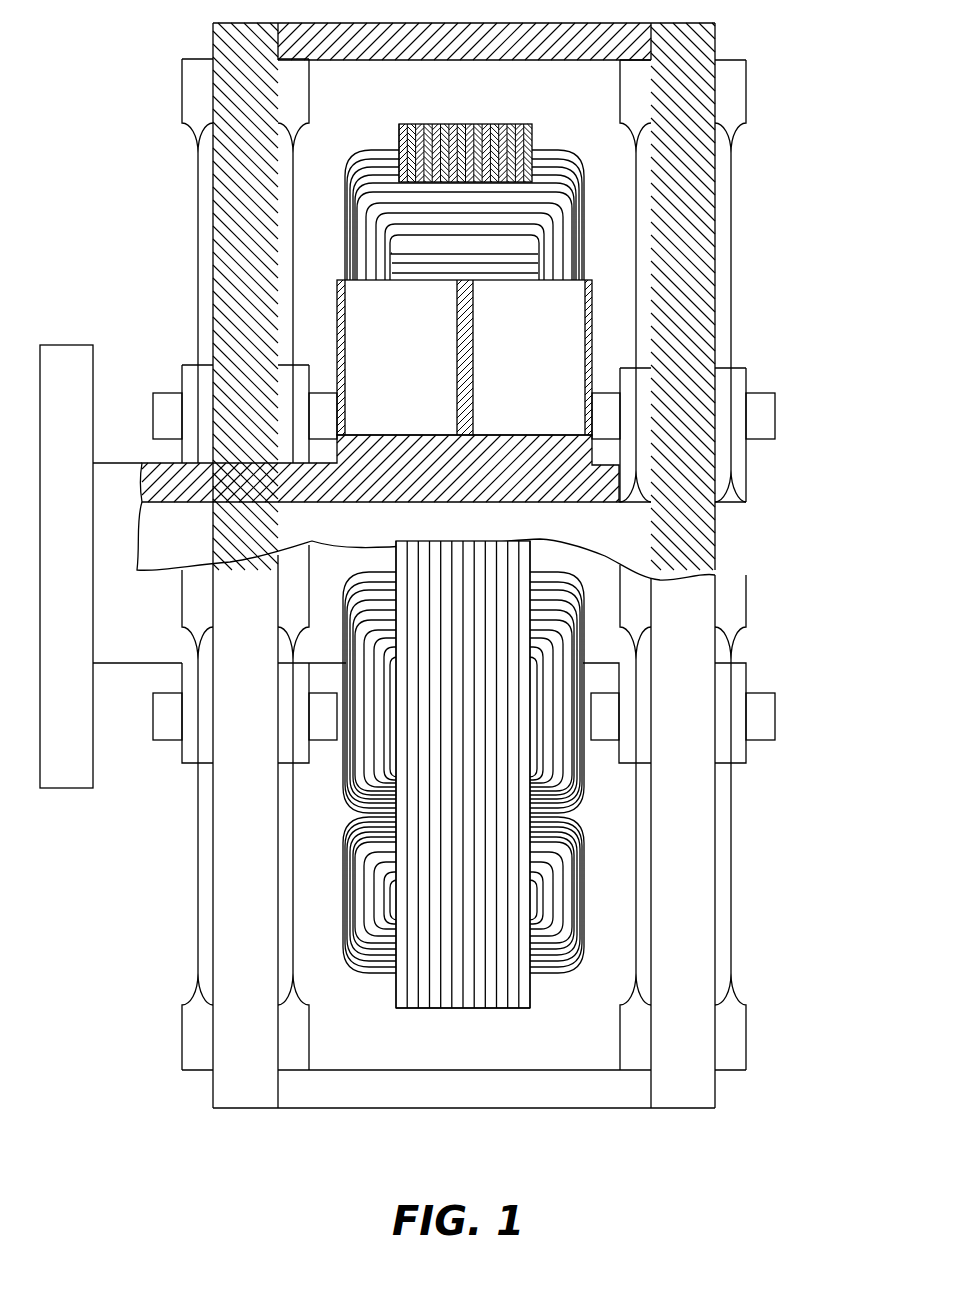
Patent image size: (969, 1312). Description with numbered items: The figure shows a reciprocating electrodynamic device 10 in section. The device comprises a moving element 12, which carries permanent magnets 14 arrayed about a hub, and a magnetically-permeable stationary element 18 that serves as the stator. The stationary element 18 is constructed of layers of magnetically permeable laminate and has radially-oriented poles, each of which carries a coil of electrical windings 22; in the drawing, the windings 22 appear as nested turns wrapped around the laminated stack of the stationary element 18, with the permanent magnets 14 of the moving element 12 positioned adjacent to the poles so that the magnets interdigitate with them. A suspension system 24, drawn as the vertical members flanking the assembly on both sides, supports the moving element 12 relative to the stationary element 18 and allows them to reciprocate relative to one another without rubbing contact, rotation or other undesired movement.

The reciprocating electrodynamic device 10 is at (810, 151).
The moving element 12 is at (583, 457).
The permanent magnets 14 is at (354, 313).
The stationary element 18 is at (533, 135).
The coil of electrical windings 22 is at (388, 158).
The suspension system 24 is at (222, 872).